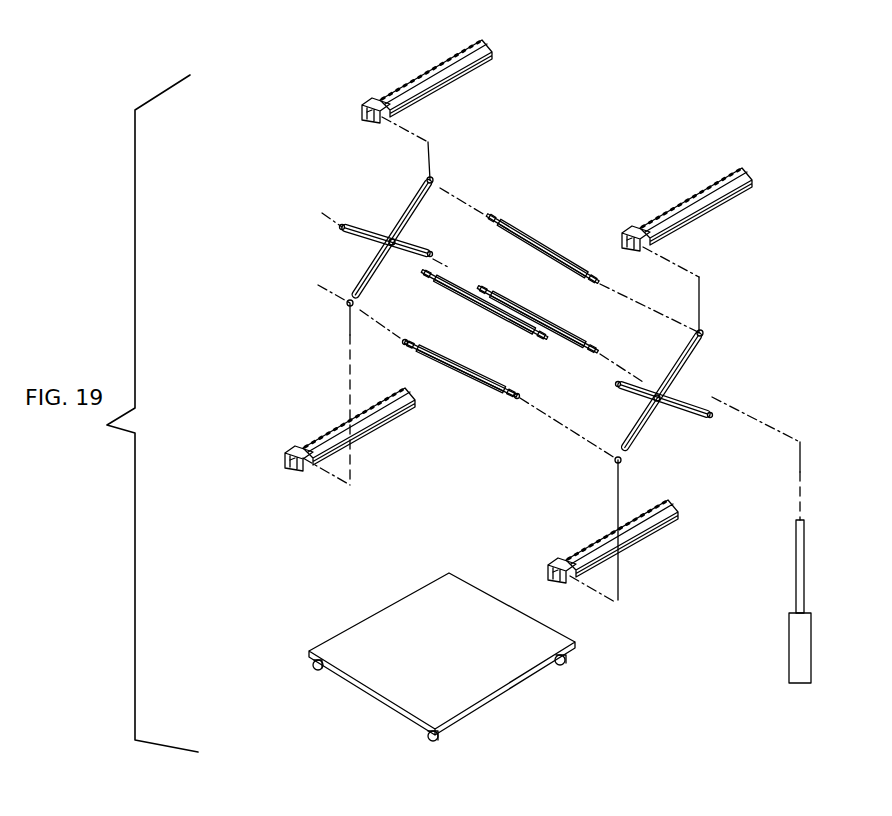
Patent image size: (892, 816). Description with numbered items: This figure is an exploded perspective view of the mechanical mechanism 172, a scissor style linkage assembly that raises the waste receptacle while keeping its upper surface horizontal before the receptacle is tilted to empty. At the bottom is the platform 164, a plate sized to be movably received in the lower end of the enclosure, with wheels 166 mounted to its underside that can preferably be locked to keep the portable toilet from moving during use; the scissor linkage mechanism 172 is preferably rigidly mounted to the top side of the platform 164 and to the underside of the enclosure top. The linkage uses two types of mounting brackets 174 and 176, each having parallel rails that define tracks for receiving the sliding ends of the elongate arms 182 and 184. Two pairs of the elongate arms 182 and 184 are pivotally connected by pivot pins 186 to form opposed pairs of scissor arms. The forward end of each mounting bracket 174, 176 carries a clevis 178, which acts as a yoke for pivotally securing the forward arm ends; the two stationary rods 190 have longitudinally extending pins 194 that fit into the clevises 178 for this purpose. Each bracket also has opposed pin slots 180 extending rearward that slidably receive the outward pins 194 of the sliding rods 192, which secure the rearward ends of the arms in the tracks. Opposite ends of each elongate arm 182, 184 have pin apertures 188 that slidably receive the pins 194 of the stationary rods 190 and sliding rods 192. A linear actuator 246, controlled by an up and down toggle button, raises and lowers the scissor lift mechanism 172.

The platform 164 is at (536, 642).
The wheels 166 is at (316, 668).
The scissor linkage mechanism 172 is at (287, 193).
The mounting bracket 174 is at (445, 62).
The mounting bracket 176 is at (708, 201).
The clevis 178 is at (382, 116).
The pin slots 180 is at (430, 86).
The elongate arm 182 is at (414, 210).
The elongate arm 184 is at (366, 237).
The pivot pins 186 is at (394, 238).
The pin apertures 188 is at (343, 304).
The stationary rods 190 is at (455, 293).
The sliding rods 192 is at (533, 234).
The pins 194 is at (410, 341).
The linear actuator 246 is at (800, 637).